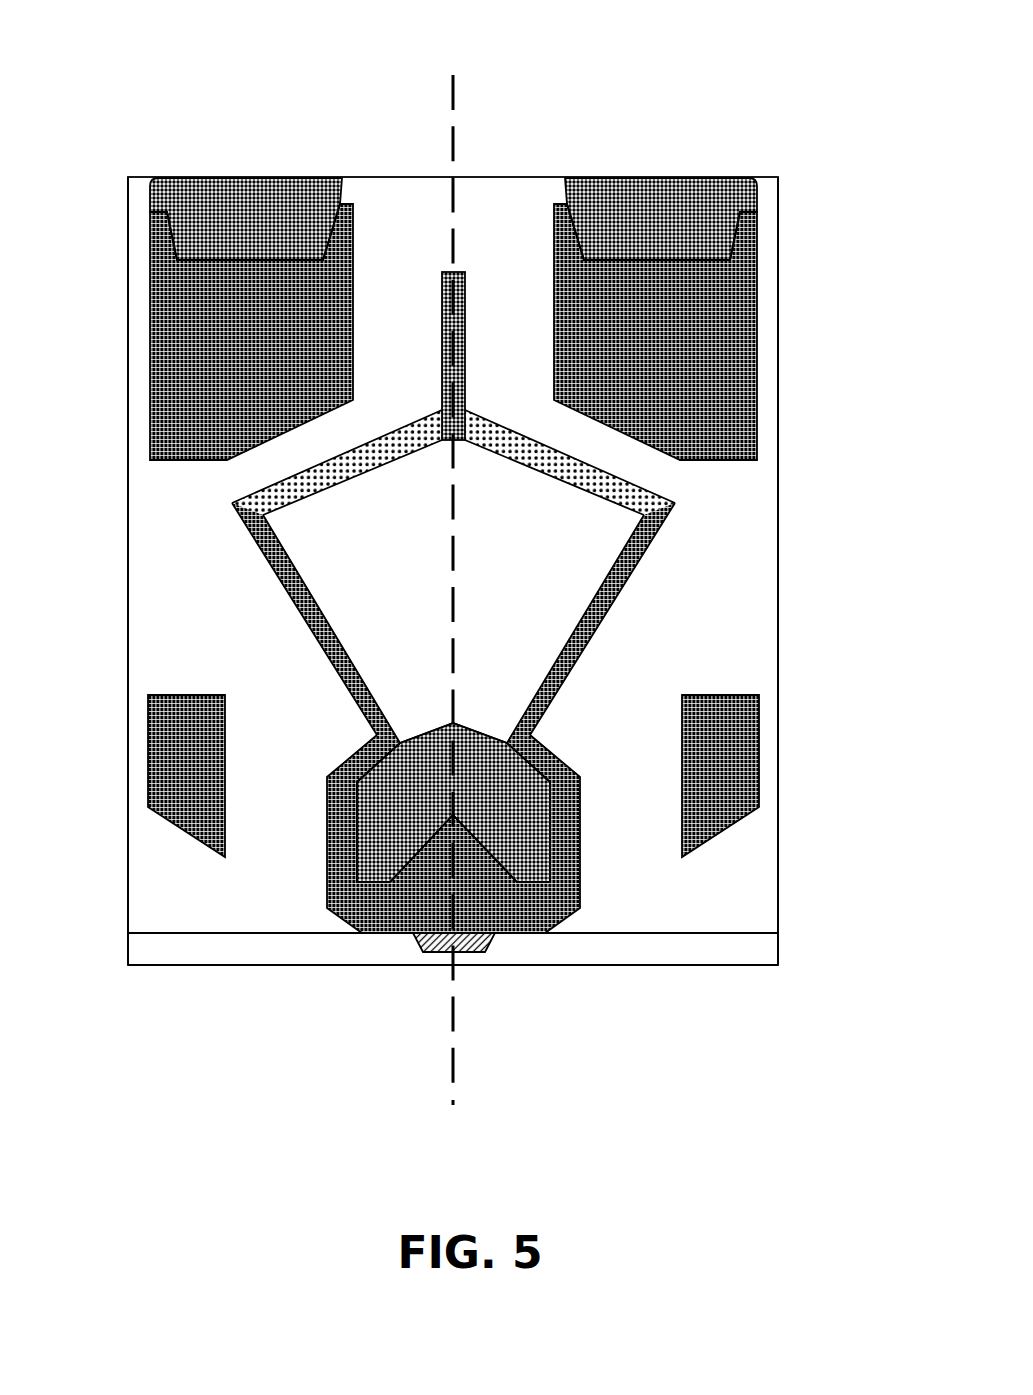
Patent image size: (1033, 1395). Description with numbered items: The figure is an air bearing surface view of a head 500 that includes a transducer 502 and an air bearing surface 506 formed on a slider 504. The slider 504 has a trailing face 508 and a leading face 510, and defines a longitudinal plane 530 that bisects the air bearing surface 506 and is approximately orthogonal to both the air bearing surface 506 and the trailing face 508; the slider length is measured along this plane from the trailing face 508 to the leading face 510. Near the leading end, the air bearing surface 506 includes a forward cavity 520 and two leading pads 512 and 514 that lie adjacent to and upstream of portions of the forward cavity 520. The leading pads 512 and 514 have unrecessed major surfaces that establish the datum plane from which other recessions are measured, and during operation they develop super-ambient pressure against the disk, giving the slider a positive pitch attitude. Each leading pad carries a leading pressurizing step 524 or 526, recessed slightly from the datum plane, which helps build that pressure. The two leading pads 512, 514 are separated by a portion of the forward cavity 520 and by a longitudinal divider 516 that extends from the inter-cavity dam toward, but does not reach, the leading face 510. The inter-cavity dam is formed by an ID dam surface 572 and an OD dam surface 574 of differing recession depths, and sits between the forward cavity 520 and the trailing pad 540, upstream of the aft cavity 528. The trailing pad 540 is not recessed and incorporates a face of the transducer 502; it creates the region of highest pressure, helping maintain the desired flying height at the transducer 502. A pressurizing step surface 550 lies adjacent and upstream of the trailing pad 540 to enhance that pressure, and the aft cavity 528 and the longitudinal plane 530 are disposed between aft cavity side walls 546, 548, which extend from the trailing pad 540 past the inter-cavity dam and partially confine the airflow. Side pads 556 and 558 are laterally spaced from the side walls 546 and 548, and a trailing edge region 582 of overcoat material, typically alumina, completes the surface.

The head 500 is at (743, 88).
The transducer 502 is at (460, 947).
The slider 504 is at (128, 528).
The air bearing surface 506 is at (735, 532).
The trailing face 508 is at (188, 967).
The leading face 510 is at (251, 281).
The leading pad 512 is at (238, 357).
The leading pad 514 is at (628, 357).
The longitudinal divider 516 is at (462, 323).
The forward cavity 520 is at (386, 246).
The leading pressurizing step 524 is at (218, 235).
The leading pressurizing step 526 is at (628, 235).
The aft cavity 528 is at (465, 524).
The longitudinal plane 530 is at (455, 596).
The trailing pad 540 is at (453, 828).
The aft cavity side wall 546 is at (317, 620).
The aft cavity side wall 548 is at (605, 597).
The pressurizing step surface 550 is at (384, 802).
The side pad 556 is at (164, 782).
The side pad 558 is at (698, 782).
The ID dam surface 572 is at (380, 453).
The OD dam surface 574 is at (530, 453).
The trailing edge region 582 is at (302, 953).